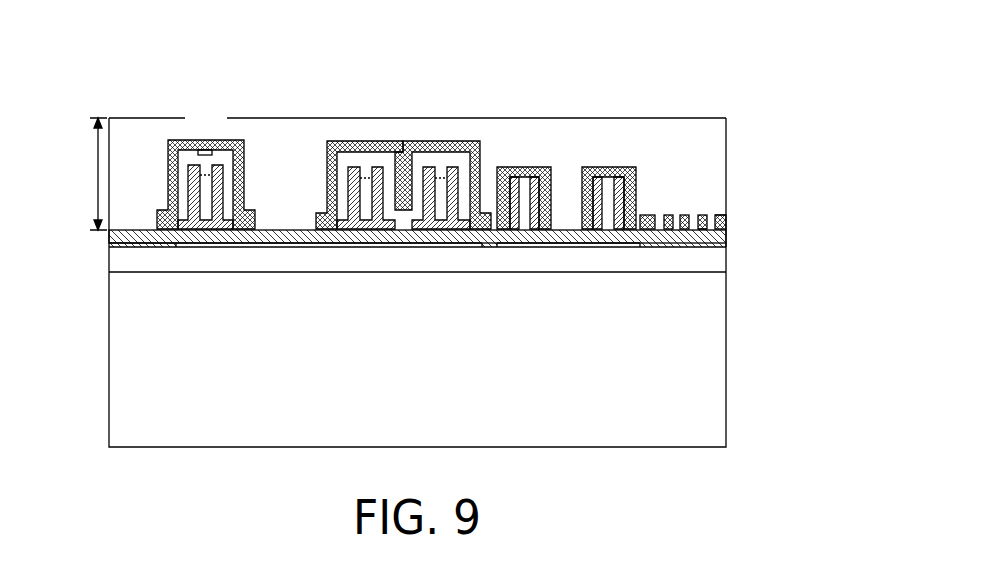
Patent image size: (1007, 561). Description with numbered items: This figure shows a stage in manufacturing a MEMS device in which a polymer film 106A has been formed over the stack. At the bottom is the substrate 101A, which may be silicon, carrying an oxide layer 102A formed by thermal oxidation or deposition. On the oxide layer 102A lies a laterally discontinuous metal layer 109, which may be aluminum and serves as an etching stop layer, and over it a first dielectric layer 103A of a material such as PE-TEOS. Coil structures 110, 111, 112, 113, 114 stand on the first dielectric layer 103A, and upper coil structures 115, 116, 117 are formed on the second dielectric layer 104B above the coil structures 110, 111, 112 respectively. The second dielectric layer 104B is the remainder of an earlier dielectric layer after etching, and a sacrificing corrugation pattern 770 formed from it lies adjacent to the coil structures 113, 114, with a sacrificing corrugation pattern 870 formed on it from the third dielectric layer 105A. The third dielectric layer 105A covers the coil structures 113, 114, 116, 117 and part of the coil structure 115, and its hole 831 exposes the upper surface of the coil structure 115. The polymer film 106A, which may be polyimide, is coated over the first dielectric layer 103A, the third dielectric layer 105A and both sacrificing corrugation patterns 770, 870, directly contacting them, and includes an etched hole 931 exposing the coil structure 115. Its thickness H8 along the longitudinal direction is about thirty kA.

The substrate 101A is at (696, 362).
The oxide layer 102A is at (698, 262).
The first dielectric layer 103A is at (702, 237).
The second dielectric layer 104B is at (727, 228).
The third dielectric layer 105A is at (727, 216).
The polymer film 106A is at (697, 138).
The metal layer 109 is at (250, 245).
The coil structure 110 is at (206, 216).
The coil structure 111 is at (363, 187).
The coil structure 112 is at (440, 187).
The coil structure 113 is at (522, 190).
The coil structure 114 is at (608, 188).
The coil structure 115 is at (191, 158).
The coil structure 116 is at (377, 157).
The coil structure 117 is at (460, 160).
The sacrificing corrugation pattern 770 is at (662, 217).
The sacrificing corrugation pattern 870 is at (712, 222).
The hole 831 is at (208, 144).
The hole 931 is at (194, 128).
The thickness H8 is at (93, 173).